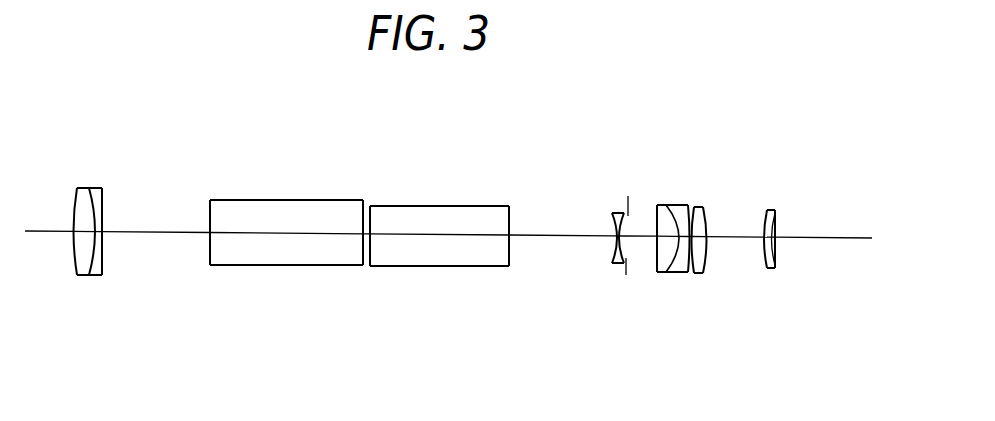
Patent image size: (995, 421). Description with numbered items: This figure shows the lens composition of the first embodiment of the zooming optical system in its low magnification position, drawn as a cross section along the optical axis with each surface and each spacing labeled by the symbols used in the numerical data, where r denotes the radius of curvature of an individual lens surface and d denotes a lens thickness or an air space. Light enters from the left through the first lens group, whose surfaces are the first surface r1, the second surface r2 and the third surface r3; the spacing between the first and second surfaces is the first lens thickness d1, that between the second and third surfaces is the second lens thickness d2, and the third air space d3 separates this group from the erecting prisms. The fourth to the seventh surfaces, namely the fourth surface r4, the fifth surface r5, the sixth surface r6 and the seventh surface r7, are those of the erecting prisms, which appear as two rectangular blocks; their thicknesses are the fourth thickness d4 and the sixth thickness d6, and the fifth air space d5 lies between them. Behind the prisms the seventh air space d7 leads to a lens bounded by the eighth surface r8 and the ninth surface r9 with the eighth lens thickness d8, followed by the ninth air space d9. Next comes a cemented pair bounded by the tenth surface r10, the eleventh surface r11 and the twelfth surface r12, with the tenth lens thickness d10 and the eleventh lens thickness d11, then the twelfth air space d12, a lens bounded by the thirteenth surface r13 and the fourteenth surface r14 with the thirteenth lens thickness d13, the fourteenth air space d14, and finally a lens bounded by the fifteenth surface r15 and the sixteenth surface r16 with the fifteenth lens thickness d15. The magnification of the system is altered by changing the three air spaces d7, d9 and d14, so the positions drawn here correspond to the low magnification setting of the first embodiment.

The radius of curvature of first lens surface r1 is at (76, 197).
The radius of curvature of second lens surface r2 is at (89, 200).
The radius of curvature of third lens surface r3 is at (103, 190).
The radius of curvature of fourth surface r4 is at (210, 210).
The radius of curvature of fifth surface r5 is at (365, 208).
The radius of curvature of sixth surface r6 is at (372, 208).
The radius of curvature of seventh surface r7 is at (513, 210).
The radius of curvature of eighth lens surface r8 is at (613, 213).
The radius of curvature of ninth lens surface r9 is at (623, 212).
The radius of curvature of tenth lens surface r10 is at (657, 205).
The radius of curvature of eleventh lens surface r11 is at (672, 206).
The radius of curvature of twelfth lens surface r12 is at (687, 207).
The radius of curvature of thirteenth lens surface r13 is at (695, 207).
The radius of curvature of fourteenth lens surface r14 is at (704, 210).
The radius of curvature of fifteenth lens surface r15 is at (765, 212).
The radius of curvature of sixteenth lens surface r16 is at (775, 217).
The first lens thickness d1 is at (83, 275).
The second lens thickness d2 is at (102, 277).
The third air space d3 is at (155, 232).
The fourth thickness d4 is at (280, 267).
The fifth air space d5 is at (367, 267).
The sixth thickness d6 is at (437, 267).
The seventh air space d7 is at (562, 237).
The eighth lens thickness d8 is at (617, 263).
The ninth air space d9 is at (637, 238).
The tenth lens thickness d10 is at (663, 272).
The eleventh lens thickness d11 is at (680, 272).
The twelfth air space d12 is at (705, 273).
The thirteenth lens thickness d13 is at (735, 238).
The fourteenth air space d14 is at (767, 268).
The fifteenth lens thickness d15 is at (775, 238).